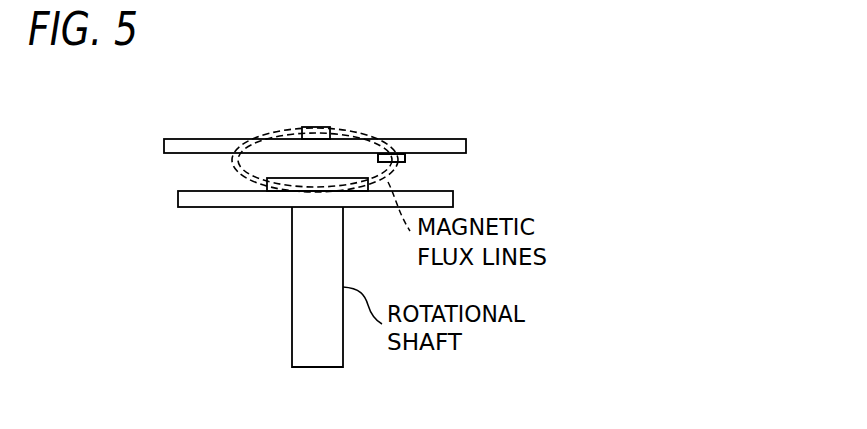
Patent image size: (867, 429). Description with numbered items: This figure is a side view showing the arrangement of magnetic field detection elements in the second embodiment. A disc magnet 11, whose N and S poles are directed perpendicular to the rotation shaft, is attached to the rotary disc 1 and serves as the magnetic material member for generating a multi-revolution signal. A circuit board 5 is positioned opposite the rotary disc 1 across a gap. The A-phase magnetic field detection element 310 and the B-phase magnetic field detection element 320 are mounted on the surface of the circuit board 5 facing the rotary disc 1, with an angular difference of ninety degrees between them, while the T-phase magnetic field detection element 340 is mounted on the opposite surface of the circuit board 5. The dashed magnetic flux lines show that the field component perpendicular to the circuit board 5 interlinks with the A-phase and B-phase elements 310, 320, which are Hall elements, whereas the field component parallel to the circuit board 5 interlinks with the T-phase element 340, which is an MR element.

The rotary disc 1 is at (178, 200).
The circuit board 5 is at (212, 139).
The disc magnet 11 is at (283, 191).
The A-phase magnetic field detection element 310 is at (405, 157).
The B-phase magnetic field detection element 320 is at (405, 157).
The T-phase magnetic field detection element 340 is at (307, 127).